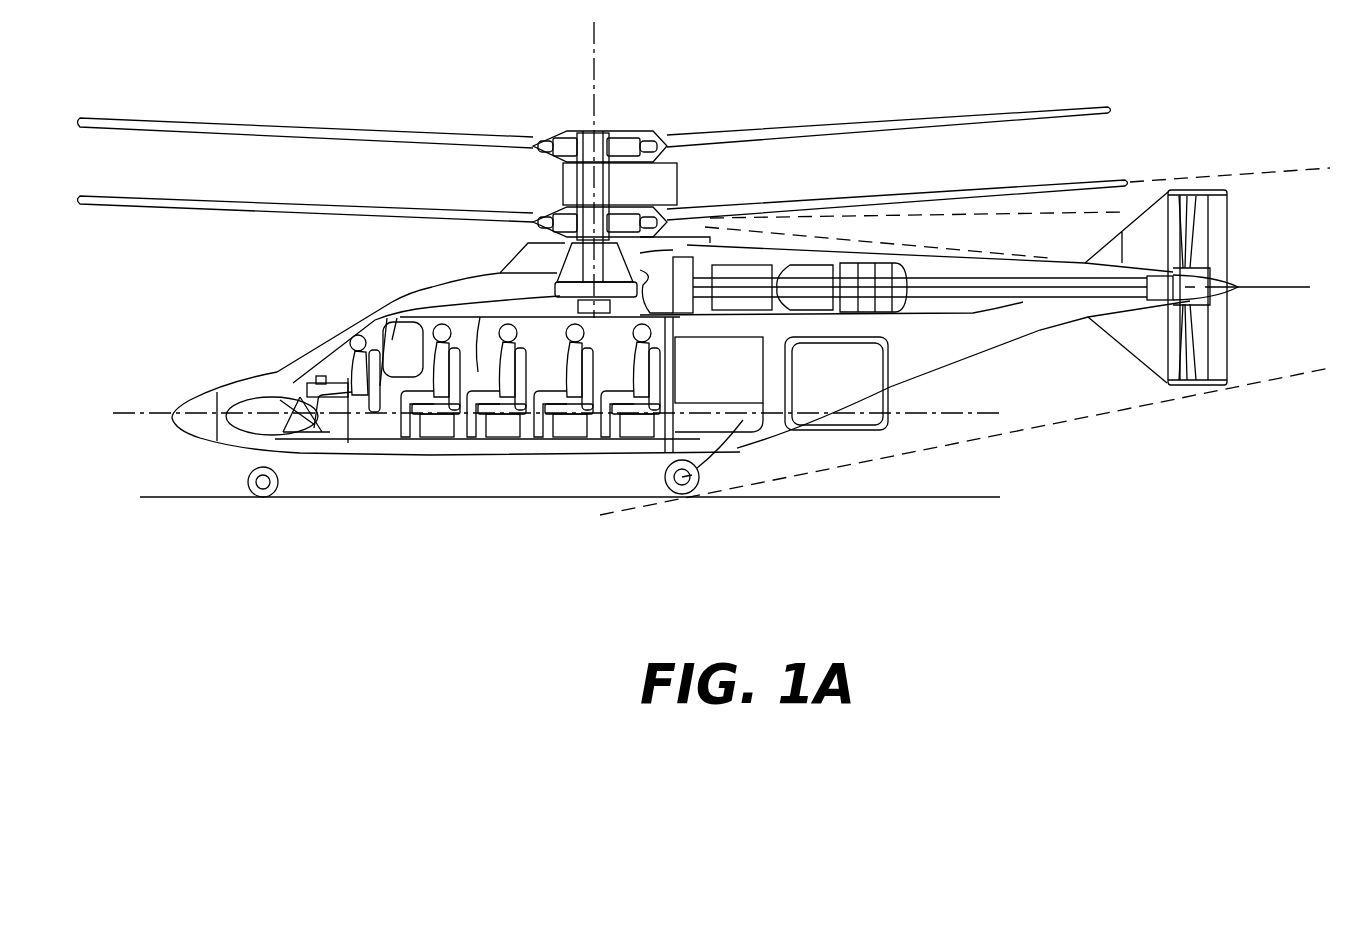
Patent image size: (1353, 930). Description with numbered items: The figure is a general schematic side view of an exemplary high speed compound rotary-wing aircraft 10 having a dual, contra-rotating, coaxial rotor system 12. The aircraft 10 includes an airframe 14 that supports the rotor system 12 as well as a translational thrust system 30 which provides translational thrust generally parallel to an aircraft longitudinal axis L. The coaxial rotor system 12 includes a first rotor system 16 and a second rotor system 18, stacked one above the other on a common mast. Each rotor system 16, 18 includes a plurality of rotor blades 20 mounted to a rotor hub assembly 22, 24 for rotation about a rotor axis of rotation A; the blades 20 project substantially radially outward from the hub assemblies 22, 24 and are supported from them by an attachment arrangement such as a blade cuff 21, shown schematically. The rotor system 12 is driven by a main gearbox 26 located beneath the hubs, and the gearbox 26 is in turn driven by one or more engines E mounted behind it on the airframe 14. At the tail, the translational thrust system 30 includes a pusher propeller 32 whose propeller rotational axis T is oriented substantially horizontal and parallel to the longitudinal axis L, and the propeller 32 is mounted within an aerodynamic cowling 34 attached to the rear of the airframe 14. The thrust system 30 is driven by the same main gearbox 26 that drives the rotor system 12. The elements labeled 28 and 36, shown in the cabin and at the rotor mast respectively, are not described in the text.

The high speed compound rotary-wing aircraft 10 is at (903, 85).
The dual, contra-rotating, coaxial rotor system 12 is at (654, 121).
The airframe 14 is at (426, 299).
The first rotor system 16 is at (571, 129).
The second rotor system 18 is at (534, 216).
The rotor blades 20 is at (794, 205).
The blade cuff 21 is at (536, 142).
The rotor hub assembly 22 is at (622, 135).
The rotor hub assembly 24 is at (630, 218).
The main gearbox 26 is at (560, 275).
The passenger cabin 28 is at (503, 423).
The translational thrust system 30 is at (1247, 231).
The pusher propeller 32 is at (1192, 256).
The aerodynamic cowling 34 is at (1188, 212).
The rotor shaft fairing 36 is at (556, 180).
The rotor axis of rotation A is at (597, 33).
The engine E is at (833, 265).
The propeller rotational axis T is at (1278, 289).
The aircraft longitudinal axis L is at (960, 412).